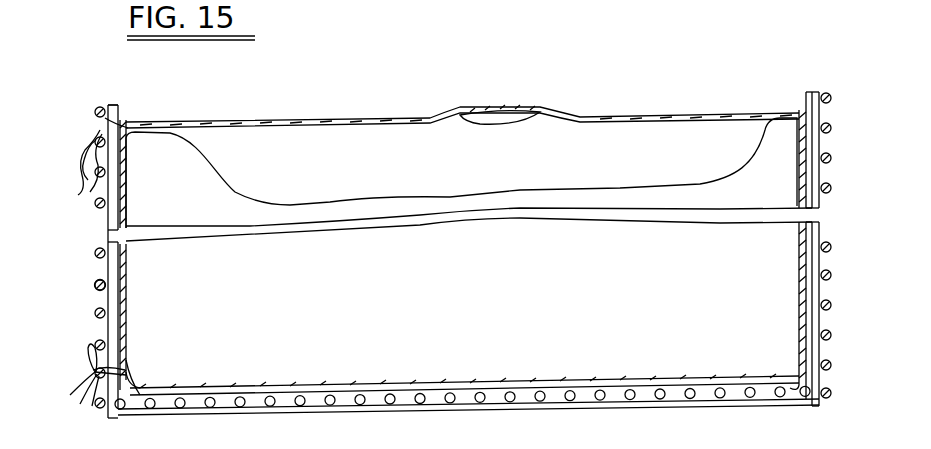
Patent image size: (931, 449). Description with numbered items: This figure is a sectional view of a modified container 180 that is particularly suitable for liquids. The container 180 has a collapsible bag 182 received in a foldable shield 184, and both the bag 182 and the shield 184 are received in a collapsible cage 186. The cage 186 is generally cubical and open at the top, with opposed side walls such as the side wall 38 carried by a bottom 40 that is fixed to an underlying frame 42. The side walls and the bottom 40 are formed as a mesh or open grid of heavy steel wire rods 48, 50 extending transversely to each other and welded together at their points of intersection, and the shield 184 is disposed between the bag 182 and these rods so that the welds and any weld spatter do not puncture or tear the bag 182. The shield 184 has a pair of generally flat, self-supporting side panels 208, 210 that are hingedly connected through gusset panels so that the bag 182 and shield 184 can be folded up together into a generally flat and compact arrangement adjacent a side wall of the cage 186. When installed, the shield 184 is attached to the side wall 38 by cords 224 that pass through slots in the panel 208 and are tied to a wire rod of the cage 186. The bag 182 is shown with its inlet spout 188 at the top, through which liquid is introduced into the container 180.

The container 180 is at (101, 76).
The cords 224 is at (68, 176).
The rods 48 is at (97, 205).
The cage 186 is at (92, 280).
The side wall 38 is at (95, 315).
The side panel 208 is at (127, 318).
The bottom 40 is at (516, 412).
The frame 42 is at (792, 410).
The side panel 210 is at (808, 297).
The rods 50 is at (820, 263).
The collapsible bag 182 is at (632, 128).
The inlet spout 188 is at (508, 108).
The foldable shield 184 is at (355, 118).